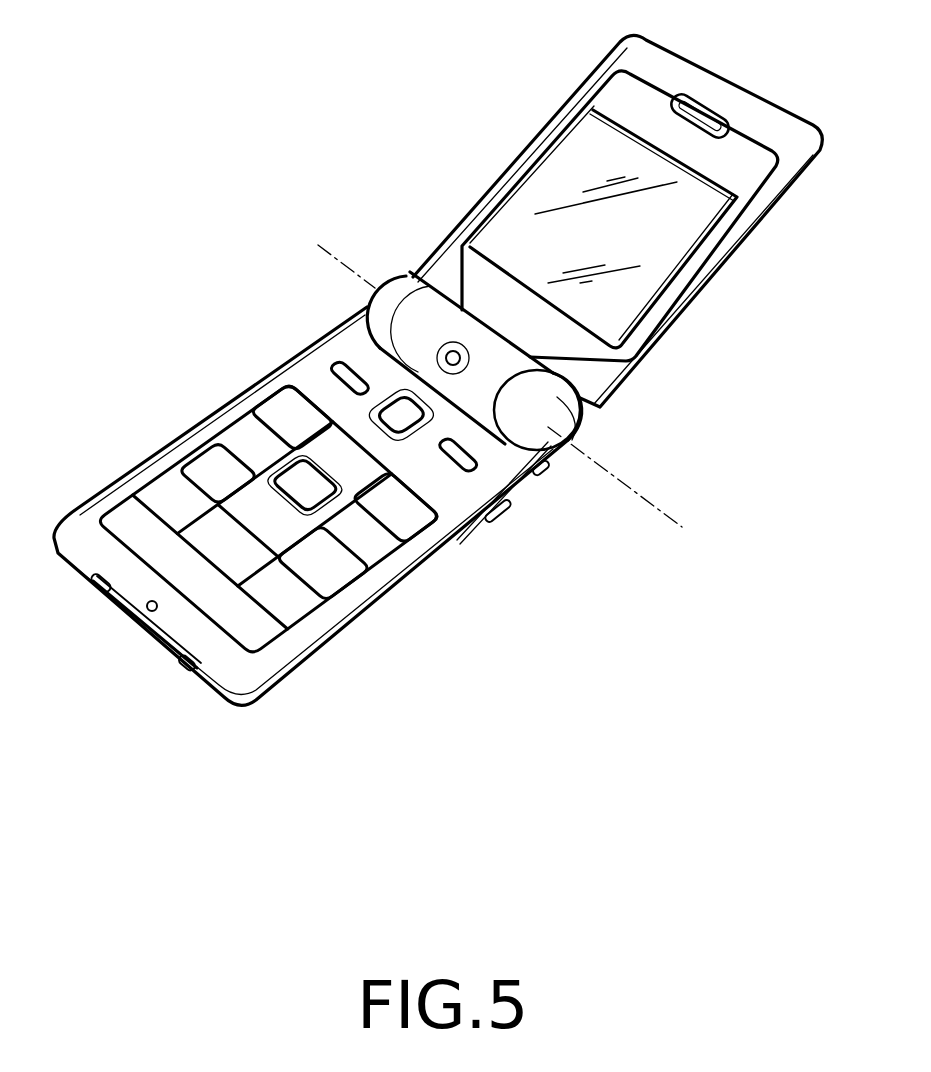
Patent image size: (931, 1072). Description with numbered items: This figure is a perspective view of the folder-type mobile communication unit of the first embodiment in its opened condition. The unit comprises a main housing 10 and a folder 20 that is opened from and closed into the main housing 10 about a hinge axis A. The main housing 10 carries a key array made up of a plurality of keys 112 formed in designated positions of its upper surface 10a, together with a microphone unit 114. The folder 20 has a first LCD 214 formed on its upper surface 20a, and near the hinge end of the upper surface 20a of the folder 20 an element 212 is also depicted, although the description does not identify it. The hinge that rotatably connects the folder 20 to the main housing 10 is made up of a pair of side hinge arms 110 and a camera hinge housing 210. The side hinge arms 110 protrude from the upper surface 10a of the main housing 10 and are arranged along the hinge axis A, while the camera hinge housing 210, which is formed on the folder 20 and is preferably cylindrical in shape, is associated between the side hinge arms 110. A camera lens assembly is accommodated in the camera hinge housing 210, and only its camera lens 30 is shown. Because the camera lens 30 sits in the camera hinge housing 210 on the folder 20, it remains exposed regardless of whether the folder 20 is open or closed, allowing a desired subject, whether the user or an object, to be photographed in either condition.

The main housing 10 is at (392, 620).
The upper surface of the main housing 10a is at (470, 492).
The side hinge arms 110 is at (557, 397).
The keys 112 is at (172, 492).
The microphone unit 114 is at (140, 611).
The folder 20 is at (720, 285).
The upper surface of the folder 20a is at (753, 183).
The camera hinge housing 210 is at (410, 337).
The speaker 212 is at (710, 117).
The first LCD 214 is at (513, 232).
The camera lens 30 is at (452, 342).
The hinge axis A is at (668, 523).